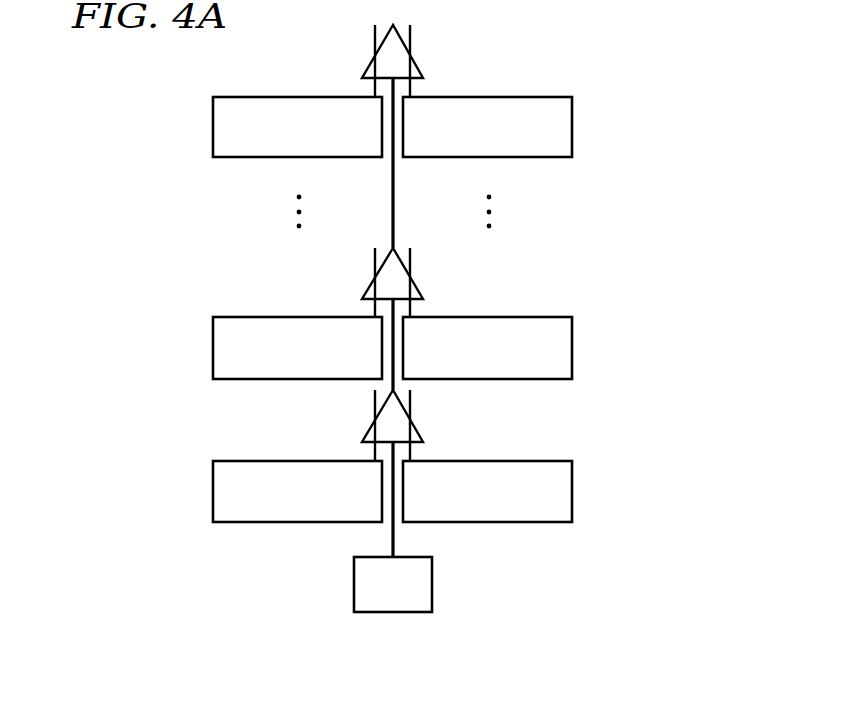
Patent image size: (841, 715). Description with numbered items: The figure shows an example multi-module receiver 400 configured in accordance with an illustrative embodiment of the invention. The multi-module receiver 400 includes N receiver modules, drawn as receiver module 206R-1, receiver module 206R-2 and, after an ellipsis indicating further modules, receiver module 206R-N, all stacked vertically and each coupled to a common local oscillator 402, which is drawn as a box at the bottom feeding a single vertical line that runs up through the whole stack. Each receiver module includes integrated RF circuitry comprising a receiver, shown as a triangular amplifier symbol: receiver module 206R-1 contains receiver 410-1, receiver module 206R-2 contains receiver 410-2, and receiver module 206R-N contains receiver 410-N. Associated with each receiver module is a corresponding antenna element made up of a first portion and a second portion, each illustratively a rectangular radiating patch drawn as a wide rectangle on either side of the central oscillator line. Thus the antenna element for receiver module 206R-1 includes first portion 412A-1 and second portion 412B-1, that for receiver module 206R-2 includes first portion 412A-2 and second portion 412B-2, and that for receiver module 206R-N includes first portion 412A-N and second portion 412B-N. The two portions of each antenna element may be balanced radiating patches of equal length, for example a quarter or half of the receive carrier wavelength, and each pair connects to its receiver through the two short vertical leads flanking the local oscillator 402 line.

The multi-module receiver 400 is at (647, 91).
The local oscillator 402 is at (432, 590).
The receiver module N 206R-N is at (188, 126).
The receiver module 2 206R-2 is at (186, 346).
The receiver module 1 206R-1 is at (186, 492).
The receiver 410-N is at (423, 70).
The receiver 410-2 is at (423, 291).
The receiver 410-1 is at (423, 433).
The first portion of antenna element 412A-N is at (238, 97).
The second portion of antenna element 412B-N is at (512, 97).
The first portion of antenna element 412A-2 is at (232, 317).
The second portion of antenna element 412B-2 is at (533, 317).
The first portion of antenna element 412A-1 is at (320, 523).
The second portion of antenna element 412B-1 is at (510, 523).